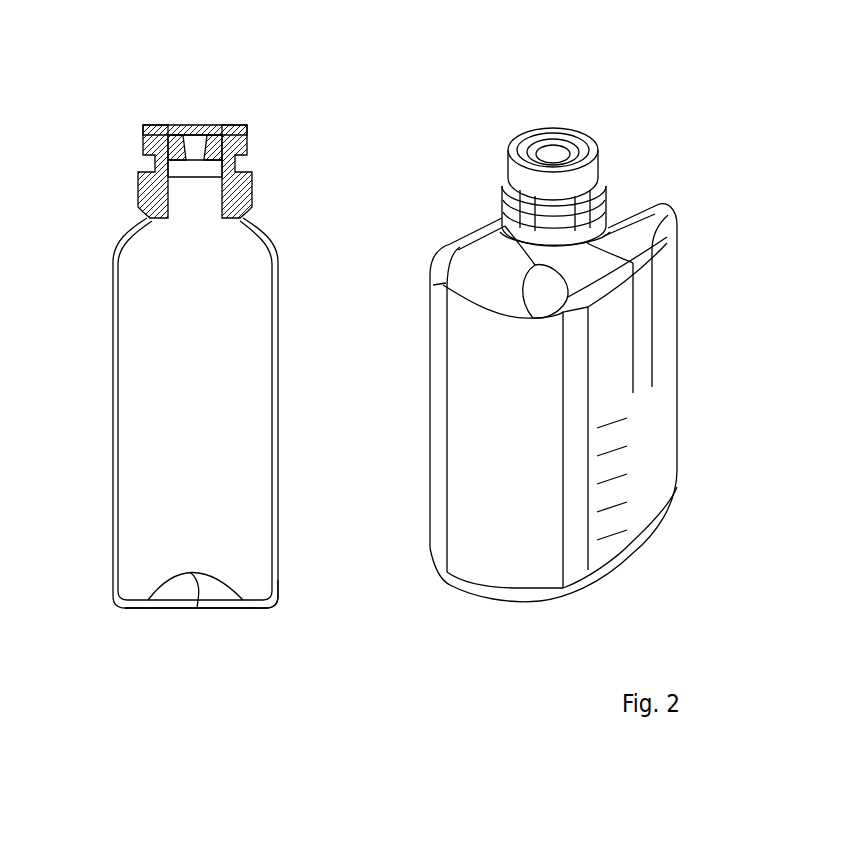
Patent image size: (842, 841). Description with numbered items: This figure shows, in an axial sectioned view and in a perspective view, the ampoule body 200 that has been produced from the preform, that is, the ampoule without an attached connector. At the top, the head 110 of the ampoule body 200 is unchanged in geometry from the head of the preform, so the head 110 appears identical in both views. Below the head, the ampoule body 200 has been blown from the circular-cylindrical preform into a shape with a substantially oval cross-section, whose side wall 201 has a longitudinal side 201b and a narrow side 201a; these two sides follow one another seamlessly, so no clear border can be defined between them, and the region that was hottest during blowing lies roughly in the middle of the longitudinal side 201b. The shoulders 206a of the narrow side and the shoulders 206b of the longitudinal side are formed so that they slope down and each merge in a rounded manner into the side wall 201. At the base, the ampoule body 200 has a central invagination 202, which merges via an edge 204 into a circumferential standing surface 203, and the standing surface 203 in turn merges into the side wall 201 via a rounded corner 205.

The head 110 is at (233, 158).
The ampoule body 200 is at (556, 449).
The side wall 201 is at (112, 388).
The narrow side 201a is at (478, 420).
The longitudinal side 201b is at (615, 380).
The central invagination 202 is at (196, 608).
The standing surface 203 is at (130, 608).
The edge 204 is at (238, 608).
The rounded corner 205 is at (270, 600).
The shoulders of the narrow side 206a is at (486, 278).
The shoulders of the longitudinal side 206b is at (607, 266).